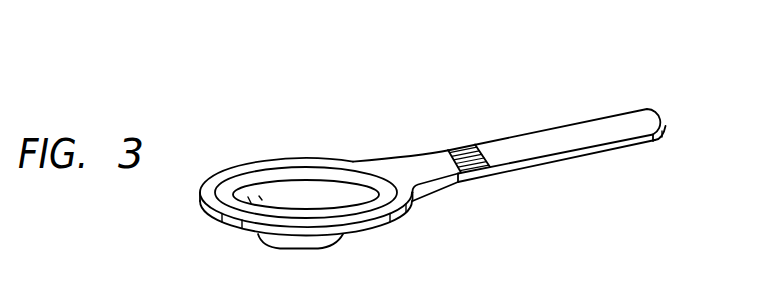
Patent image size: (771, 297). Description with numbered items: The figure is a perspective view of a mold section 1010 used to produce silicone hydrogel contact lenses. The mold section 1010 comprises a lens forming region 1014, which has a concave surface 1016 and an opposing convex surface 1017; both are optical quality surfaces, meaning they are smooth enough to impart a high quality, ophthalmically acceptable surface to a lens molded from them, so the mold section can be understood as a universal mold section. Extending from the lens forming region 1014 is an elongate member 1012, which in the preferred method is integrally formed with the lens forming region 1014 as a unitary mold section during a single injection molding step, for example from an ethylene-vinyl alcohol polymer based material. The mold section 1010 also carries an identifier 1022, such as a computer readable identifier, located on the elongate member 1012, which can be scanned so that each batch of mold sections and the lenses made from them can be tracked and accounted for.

The mold section 1010 is at (619, 81).
The elongate member 1012 is at (545, 135).
The lens forming region 1014 is at (268, 197).
The concave surface 1016 is at (332, 188).
The convex surface 1017 is at (330, 245).
The identifier 1022 is at (463, 148).